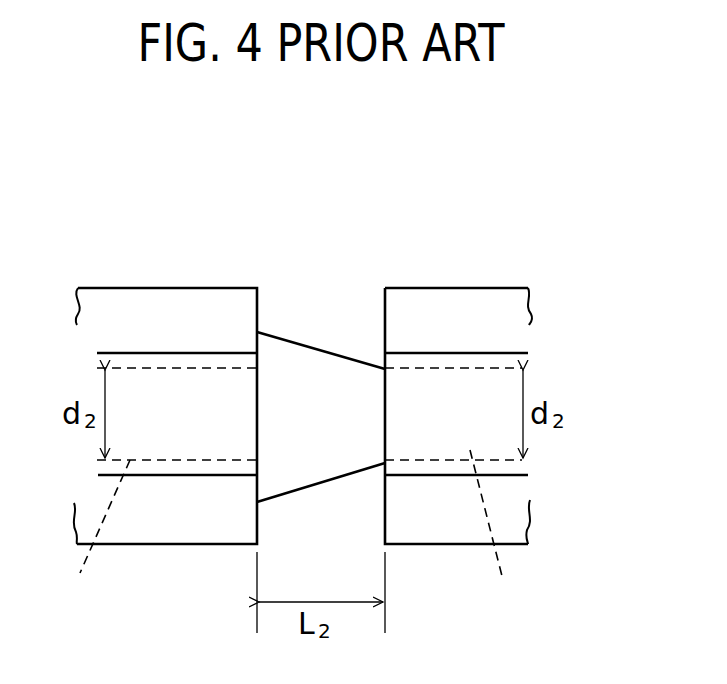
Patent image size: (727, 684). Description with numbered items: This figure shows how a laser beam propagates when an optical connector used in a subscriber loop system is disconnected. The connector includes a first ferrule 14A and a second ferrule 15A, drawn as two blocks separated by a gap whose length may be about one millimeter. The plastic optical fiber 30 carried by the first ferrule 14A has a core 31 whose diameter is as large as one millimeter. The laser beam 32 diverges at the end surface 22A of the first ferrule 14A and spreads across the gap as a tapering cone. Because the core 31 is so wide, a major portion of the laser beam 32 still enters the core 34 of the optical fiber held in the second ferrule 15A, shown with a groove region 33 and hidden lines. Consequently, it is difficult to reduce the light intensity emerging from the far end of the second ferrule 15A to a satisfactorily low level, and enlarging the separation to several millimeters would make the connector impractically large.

The second ferrule 15A is at (170, 286).
The first ferrule 14A is at (467, 284).
The optical fiber 30 is at (490, 345).
The core 31 is at (496, 535).
The laser beam 32 is at (315, 360).
The groove 33 is at (186, 478).
The core 34 is at (96, 532).
The end surface 22A is at (385, 508).